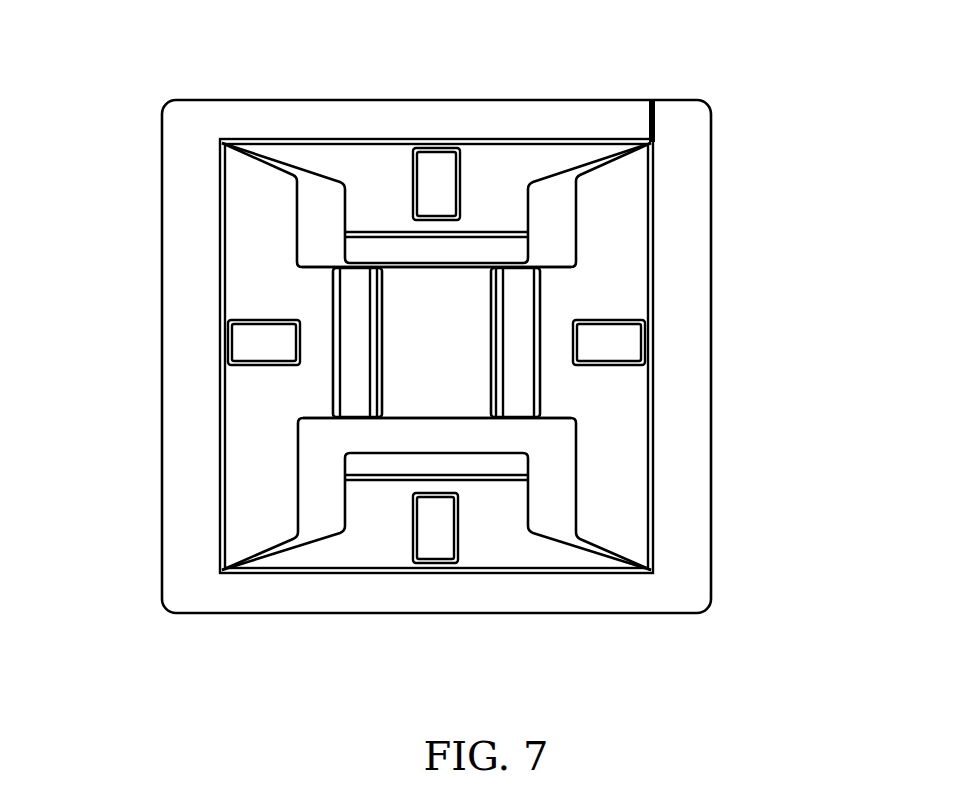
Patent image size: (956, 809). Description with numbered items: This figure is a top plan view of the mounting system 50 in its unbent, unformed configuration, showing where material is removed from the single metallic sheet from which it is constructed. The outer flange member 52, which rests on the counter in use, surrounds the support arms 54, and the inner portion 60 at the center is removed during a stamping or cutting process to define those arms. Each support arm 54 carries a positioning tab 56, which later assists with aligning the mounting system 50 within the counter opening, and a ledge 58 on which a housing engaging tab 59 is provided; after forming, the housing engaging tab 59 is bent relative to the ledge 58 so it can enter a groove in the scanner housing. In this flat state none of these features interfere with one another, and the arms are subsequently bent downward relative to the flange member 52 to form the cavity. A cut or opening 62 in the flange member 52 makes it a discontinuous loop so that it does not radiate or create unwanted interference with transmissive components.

The mounting system 50 is at (176, 42).
The flange member 52 is at (286, 110).
The support arms 54 is at (367, 110).
The positioning tab 56 is at (437, 165).
The ledge 58 is at (520, 233).
The housing engaging tab 59 is at (490, 367).
The inner portion 60 is at (417, 335).
The cut or opening 62 is at (650, 88).